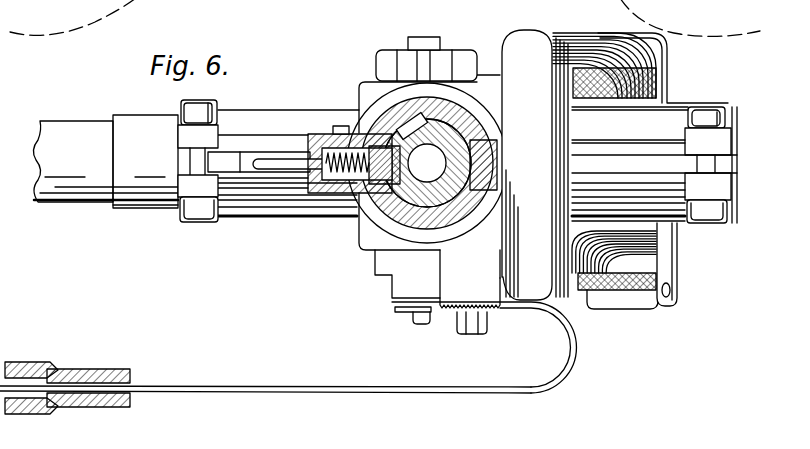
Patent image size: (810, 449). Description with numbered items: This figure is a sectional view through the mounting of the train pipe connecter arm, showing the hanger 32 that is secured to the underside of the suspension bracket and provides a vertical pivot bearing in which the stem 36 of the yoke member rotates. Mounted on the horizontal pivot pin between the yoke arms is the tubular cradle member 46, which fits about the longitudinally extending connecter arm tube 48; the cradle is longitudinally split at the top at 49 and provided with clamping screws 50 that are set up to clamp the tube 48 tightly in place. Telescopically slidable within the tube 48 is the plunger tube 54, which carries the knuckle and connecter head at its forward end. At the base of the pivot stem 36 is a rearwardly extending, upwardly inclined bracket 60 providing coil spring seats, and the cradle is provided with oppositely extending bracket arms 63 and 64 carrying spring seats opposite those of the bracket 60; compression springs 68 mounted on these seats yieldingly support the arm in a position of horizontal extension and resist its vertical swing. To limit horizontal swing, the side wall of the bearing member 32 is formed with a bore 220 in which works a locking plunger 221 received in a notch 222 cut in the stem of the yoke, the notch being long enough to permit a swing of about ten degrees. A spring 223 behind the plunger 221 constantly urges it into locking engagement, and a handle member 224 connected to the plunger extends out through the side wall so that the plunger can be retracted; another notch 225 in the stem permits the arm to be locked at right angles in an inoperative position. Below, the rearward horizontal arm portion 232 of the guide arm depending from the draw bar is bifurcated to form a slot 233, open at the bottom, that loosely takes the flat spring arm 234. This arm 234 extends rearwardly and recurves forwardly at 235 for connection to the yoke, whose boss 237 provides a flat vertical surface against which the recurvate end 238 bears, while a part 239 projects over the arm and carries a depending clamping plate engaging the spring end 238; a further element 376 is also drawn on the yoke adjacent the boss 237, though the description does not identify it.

The hanger 32 is at (368, 216).
The stem 36 is at (449, 121).
The cradle member 46 is at (272, 109).
The connecter arm tube 48 is at (145, 161).
The longitudinal split 49 is at (224, 160).
The clamping screws 50 is at (197, 158).
The plunger tube 54 is at (73, 161).
The bracket 60 is at (535, 165).
The bracket arm 63 is at (670, 268).
The bracket arm 64 is at (667, 80).
The compression springs 68 is at (585, 36).
The bore 220 is at (330, 192).
The locking plunger 221 is at (360, 140).
The notch 222 is at (385, 152).
The spring 223 is at (297, 180).
The handle member 224 is at (265, 166).
The notch 225 is at (410, 127).
The rearward arm portion 232 is at (32, 362).
The slot 233 is at (105, 369).
The arm 234 is at (190, 384).
The recurved portion 235 is at (574, 351).
The boss 237 is at (470, 279).
The recurvate end 238 is at (393, 307).
The projecting part 239 is at (460, 313).
The bracket block 376 is at (395, 283).